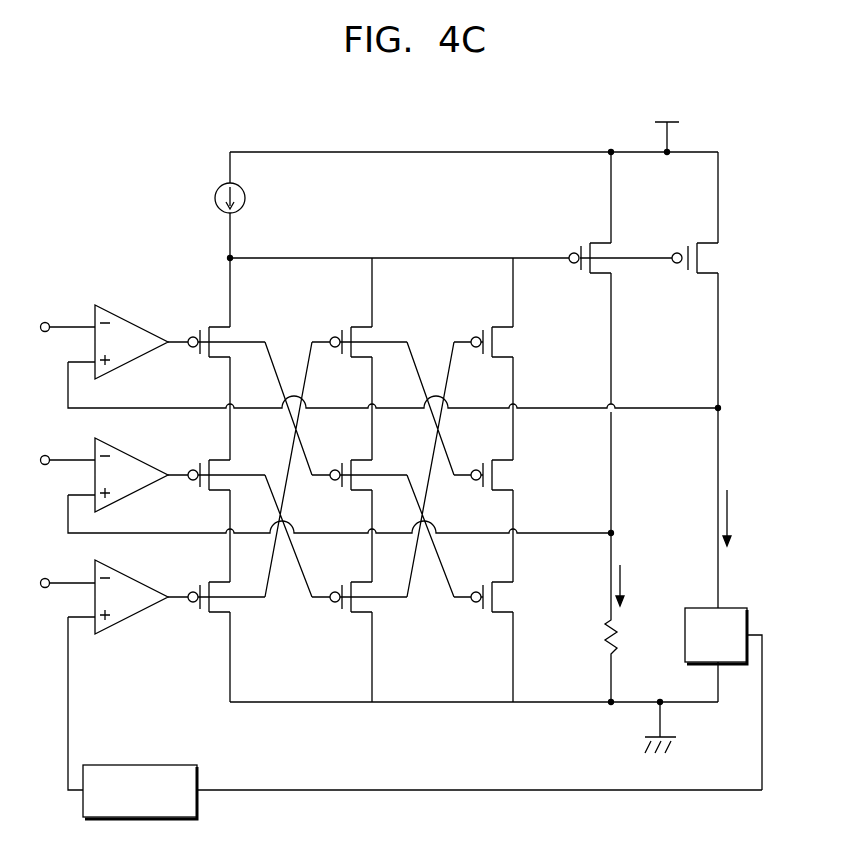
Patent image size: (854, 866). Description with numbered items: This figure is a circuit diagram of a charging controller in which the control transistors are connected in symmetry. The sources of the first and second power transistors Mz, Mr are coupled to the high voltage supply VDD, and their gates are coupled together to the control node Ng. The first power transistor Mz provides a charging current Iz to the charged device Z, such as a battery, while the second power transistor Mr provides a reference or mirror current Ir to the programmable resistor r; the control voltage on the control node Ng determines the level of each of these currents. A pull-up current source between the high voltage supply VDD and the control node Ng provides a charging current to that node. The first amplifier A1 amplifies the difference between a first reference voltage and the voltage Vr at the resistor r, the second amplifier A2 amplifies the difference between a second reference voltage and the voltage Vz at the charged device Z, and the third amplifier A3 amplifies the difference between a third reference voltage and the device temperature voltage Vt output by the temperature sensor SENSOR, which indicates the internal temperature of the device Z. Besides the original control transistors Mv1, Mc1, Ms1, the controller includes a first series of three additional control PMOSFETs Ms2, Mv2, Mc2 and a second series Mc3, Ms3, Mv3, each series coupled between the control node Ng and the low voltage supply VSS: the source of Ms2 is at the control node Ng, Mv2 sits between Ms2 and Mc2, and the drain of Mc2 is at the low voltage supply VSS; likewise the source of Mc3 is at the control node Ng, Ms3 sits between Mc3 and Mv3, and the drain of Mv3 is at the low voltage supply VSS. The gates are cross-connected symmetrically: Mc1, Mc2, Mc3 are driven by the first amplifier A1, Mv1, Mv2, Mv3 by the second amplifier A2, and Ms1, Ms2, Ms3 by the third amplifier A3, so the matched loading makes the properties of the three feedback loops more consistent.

The high voltage supply VDD is at (474, 126).
The low voltage supply VSS is at (474, 740).
The control node Ng is at (450, 248).
The voltage at the charged device Vz is at (407, 390).
The voltage at the resistor Vr is at (341, 515).
The first amplifier A1 is at (105, 475).
The second amplifier A2 is at (105, 342).
The third amplifier A3 is at (105, 597).
The second control transistor Mv1 is at (219, 338).
The first control transistor Mc1 is at (219, 471).
The third control transistor Ms1 is at (218, 604).
The additional control PMOSFET Ms2 is at (362, 338).
The additional control PMOSFET Mv2 is at (362, 471).
The additional control PMOSFET Mc2 is at (362, 604).
The additional control PMOSFET Mc3 is at (503, 342).
The additional control PMOSFET Ms3 is at (497, 475).
The additional control PMOSFET Mv3 is at (498, 597).
The second power transistor Mr is at (603, 278).
The first power transistor Mz is at (707, 380).
The programmable resistor r is at (601, 557).
The reference current Ir is at (629, 585).
The charging current Iz is at (736, 518).
The charged device Z is at (723, 699).
The temperature sensor SENSOR is at (415, 718).
The device temperature voltage Vt is at (83, 704).